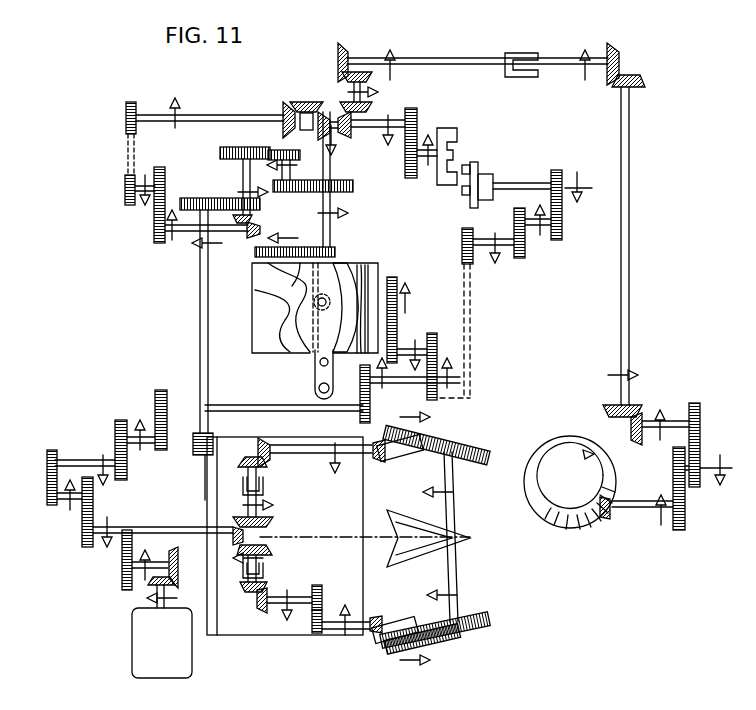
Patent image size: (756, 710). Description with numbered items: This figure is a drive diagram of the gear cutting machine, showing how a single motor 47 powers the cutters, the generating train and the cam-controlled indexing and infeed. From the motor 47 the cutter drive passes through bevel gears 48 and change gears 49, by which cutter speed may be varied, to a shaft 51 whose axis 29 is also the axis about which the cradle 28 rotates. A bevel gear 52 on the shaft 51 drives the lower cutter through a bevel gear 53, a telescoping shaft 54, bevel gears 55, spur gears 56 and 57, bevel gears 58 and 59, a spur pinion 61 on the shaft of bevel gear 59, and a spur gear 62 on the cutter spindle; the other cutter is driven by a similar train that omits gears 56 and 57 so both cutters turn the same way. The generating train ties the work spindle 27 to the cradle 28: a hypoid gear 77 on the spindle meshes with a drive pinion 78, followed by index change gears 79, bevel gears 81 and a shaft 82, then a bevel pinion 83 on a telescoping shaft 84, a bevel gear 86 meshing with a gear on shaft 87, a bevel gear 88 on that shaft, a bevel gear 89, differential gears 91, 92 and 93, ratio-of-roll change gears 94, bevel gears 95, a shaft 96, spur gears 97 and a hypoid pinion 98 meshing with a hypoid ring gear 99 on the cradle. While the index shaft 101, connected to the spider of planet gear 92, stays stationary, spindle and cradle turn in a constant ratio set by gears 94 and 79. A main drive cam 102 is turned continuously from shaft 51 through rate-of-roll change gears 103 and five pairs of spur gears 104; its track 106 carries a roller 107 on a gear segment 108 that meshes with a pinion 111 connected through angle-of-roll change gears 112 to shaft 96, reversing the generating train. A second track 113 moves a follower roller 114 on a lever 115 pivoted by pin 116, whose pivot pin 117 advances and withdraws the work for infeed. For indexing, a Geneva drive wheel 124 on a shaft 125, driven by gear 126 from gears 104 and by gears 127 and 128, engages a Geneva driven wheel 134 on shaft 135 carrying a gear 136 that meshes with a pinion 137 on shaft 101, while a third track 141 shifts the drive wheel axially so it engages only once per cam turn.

The work spindle 27 is at (566, 534).
The cradle 28 is at (268, 636).
The horizontal axis 29 is at (337, 539).
The motor 47 is at (150, 652).
The bevel gears 48 is at (178, 575).
The change gears 49 is at (122, 548).
The shaft 51 is at (147, 526).
The bevel gear 52 is at (237, 527).
The bevel gear 53 is at (266, 547).
The telescoping shaft 54 is at (263, 572).
The bevel gears 55 is at (257, 601).
The spur gear 56 is at (322, 598).
The spur gear 57 is at (318, 634).
The bevel gear 58 is at (377, 617).
The bevel gear 59 is at (381, 638).
The spur pinion 61 is at (394, 651).
The spur gear 62 is at (482, 624).
The hypoid gear 77 is at (556, 520).
The drive pinion 78 is at (606, 518).
The index change gears 79 is at (690, 440).
The bevel gears 81 is at (636, 405).
The shaft 82 is at (630, 266).
The bevel pinion 83 is at (617, 55).
The telescoping shaft 84 is at (487, 58).
The bevel gear 86 is at (346, 48).
The shaft 87 is at (352, 93).
The bevel gear 88 is at (374, 107).
The bevel gear 89 is at (350, 126).
The differential gear 91 is at (321, 124).
The differential planet gear 92 is at (300, 103).
The differential gear 93 is at (283, 112).
The ratio-of-roll change gears 94 is at (124, 136).
The bevel gears 95 is at (254, 224).
The shaft 96 is at (243, 177).
The spur gears 97 is at (224, 212).
The hypoid pinion 98 is at (195, 449).
The hypoid ring gear 99 is at (206, 481).
The index shaft 101 is at (390, 127).
The main drive cam 102 is at (285, 340).
The rate-of-roll change gears 103 is at (82, 512).
The spur gears 104 is at (397, 331).
The cam track 106 is at (268, 326).
The roller 107 is at (272, 281).
The gear segment 108 is at (296, 247).
The pinion 111 is at (335, 250).
The angle-of-roll change gears 112 is at (300, 156).
The cam track 113 is at (341, 278).
The follower roller 114 is at (363, 287).
The lever 115 is at (313, 386).
The pin 116 is at (319, 388).
The pivot pin 117 is at (320, 362).
The Geneva drive wheel 124 is at (490, 180).
The shaft 125 is at (528, 183).
The gear 126 is at (475, 262).
The gear 127 is at (522, 232).
The gear 128 is at (563, 210).
The Geneva driven wheel 134 is at (452, 130).
The shaft 135 is at (430, 160).
The gear 136 is at (410, 176).
The pinion 137 is at (417, 116).
The cam track 141 is at (397, 284).